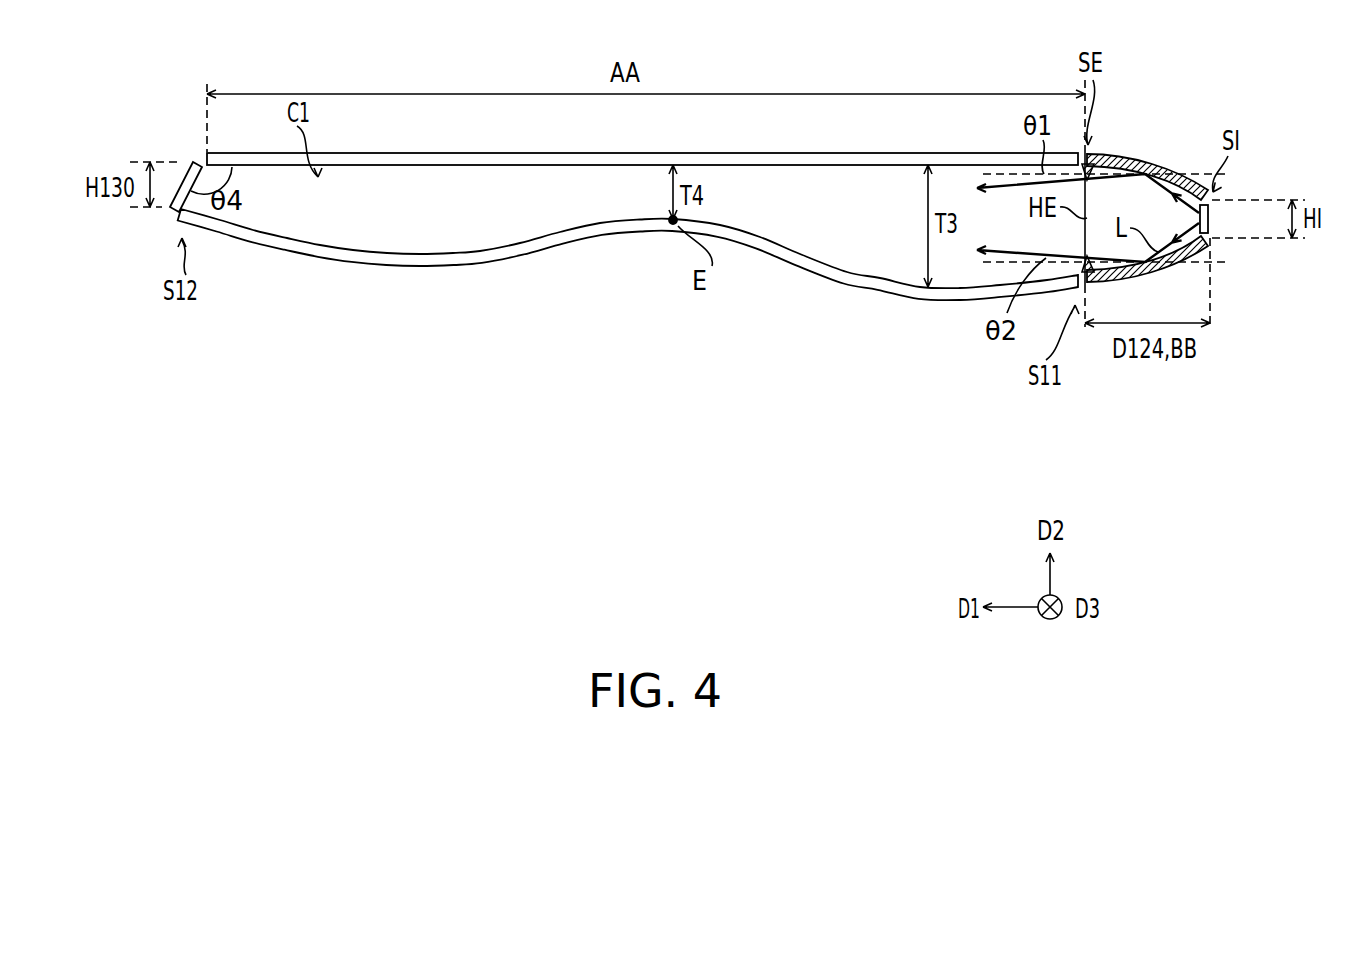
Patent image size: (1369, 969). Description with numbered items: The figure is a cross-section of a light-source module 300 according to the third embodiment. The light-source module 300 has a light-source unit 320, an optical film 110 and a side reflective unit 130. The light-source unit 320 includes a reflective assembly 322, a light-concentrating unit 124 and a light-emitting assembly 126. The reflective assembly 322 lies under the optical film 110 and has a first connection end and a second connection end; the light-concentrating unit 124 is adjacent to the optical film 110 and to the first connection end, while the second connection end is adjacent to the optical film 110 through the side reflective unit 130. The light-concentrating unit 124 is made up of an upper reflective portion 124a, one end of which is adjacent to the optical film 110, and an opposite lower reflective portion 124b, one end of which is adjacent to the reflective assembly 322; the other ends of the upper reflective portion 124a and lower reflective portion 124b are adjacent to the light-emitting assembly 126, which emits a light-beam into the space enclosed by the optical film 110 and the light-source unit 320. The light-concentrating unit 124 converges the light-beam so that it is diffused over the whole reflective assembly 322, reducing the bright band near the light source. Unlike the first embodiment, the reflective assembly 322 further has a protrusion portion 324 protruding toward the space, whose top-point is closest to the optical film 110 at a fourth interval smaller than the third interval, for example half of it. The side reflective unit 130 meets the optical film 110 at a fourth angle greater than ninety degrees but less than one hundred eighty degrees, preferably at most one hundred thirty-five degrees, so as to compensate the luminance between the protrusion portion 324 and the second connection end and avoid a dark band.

The light-source module 300 is at (1247, 473).
The optical film 110 is at (1008, 153).
The side reflective unit 130 is at (187, 164).
The light-source unit 320 is at (270, 367).
The reflective assembly 322 is at (788, 260).
The protrusion portion 324 is at (675, 246).
The light-concentrating unit 124 is at (1184, 191).
The upper reflective portion 124a is at (1180, 175).
The lower reflective portion 124b is at (1206, 276).
The light-emitting assembly 126 is at (1209, 216).